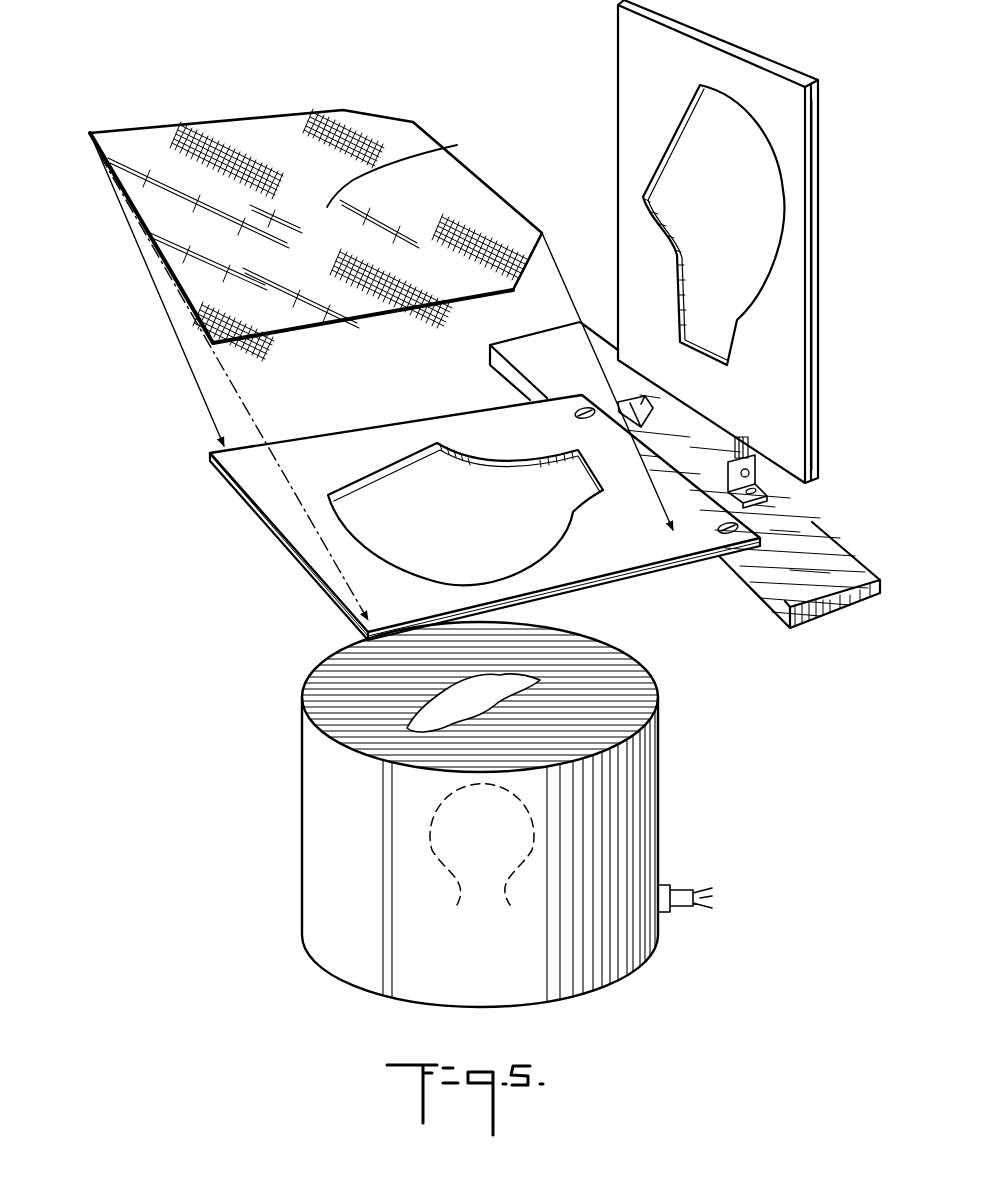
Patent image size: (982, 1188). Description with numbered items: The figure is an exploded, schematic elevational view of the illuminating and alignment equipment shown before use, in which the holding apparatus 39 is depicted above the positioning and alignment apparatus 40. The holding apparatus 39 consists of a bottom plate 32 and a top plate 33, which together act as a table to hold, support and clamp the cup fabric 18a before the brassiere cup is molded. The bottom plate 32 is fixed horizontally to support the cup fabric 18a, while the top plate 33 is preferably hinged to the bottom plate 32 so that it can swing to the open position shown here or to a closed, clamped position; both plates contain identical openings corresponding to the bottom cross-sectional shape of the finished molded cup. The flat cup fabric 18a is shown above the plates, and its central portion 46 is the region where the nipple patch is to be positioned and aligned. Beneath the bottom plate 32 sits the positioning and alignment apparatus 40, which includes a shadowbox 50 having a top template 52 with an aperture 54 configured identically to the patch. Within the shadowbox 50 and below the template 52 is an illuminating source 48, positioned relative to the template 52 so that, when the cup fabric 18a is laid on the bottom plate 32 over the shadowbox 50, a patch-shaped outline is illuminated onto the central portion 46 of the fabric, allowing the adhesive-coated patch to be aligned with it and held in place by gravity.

The cup fabric 18a is at (277, 140).
The central portion 46 is at (407, 163).
The top plate 33 is at (630, 77).
The holding apparatus 39 is at (580, 245).
The bottom plate 32 is at (627, 580).
The positioning and alignment apparatus 40 is at (338, 995).
The shadowbox 50 is at (322, 882).
The top template 52 is at (329, 719).
The aperture 54 is at (420, 700).
The illuminating source 48 is at (430, 843).